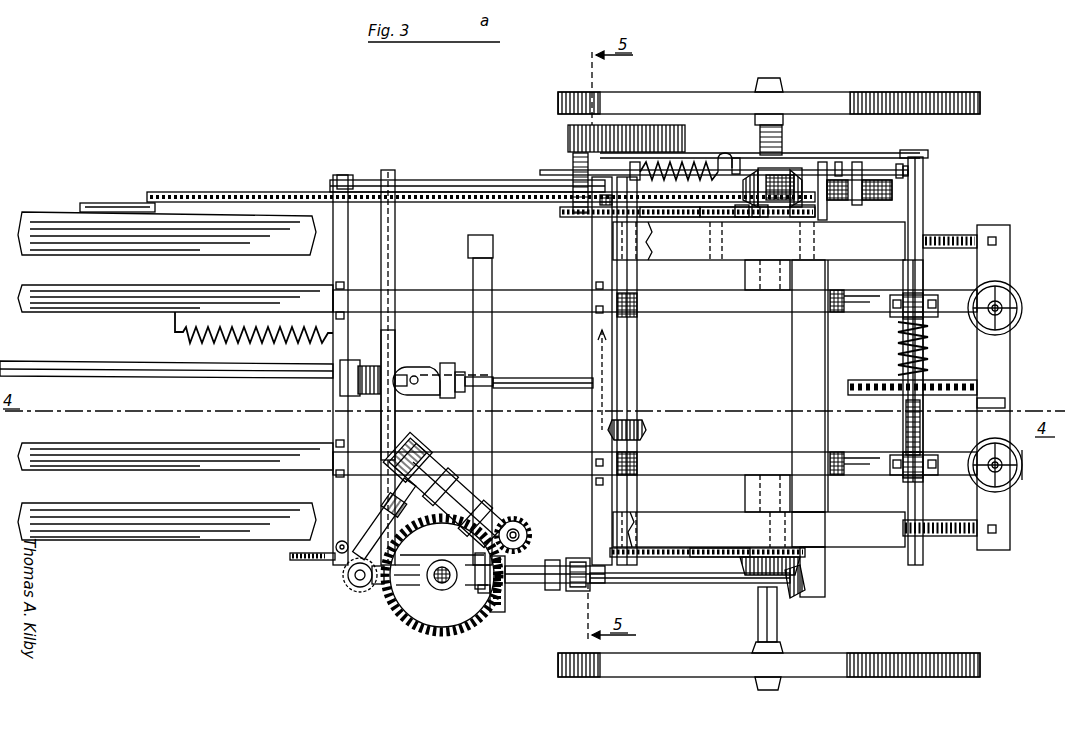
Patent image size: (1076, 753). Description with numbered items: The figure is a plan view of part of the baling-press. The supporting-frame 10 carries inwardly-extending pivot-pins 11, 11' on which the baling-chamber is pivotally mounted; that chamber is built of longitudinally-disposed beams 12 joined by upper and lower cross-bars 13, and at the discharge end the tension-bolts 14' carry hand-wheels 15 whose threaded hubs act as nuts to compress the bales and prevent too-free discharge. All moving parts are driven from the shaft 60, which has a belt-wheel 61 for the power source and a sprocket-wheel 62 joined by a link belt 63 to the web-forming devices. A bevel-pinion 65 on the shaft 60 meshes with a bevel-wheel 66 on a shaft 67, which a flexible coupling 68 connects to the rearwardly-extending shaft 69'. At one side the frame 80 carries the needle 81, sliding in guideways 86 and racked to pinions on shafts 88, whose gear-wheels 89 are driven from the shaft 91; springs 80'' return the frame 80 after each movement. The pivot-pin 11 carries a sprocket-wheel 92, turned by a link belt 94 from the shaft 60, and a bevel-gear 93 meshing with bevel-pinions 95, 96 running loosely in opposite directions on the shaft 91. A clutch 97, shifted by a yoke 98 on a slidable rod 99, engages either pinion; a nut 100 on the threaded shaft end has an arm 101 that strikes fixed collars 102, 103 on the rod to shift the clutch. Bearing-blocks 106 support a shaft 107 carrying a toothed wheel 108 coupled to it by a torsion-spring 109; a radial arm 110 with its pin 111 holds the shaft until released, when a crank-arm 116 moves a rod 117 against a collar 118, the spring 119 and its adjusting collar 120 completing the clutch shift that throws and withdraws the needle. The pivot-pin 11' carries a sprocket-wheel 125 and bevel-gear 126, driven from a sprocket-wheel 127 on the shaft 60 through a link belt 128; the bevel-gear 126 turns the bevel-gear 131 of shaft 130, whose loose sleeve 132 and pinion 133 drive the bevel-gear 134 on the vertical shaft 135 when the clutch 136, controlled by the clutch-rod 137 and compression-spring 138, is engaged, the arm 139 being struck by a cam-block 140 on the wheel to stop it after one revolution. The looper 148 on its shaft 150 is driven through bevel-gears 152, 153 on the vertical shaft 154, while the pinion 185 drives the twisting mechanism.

The supporting-frame 10 is at (92, 502).
The pivot-pin 11 is at (759, 367).
The pivot-pin 11' is at (766, 467).
The longitudinally-disposed beams 12 is at (55, 282).
The cross-bars 13 is at (980, 358).
The tension-bolts 14' is at (1037, 460).
The hand-wheels 15 is at (980, 290).
The shaft 60 is at (638, 362).
The belt-wheel 61 is at (568, 136).
The sprocket-wheel 62 is at (672, 212).
The link belt 63 is at (252, 188).
The bevel-pinion 65 is at (646, 432).
The bevel-wheel 66 is at (598, 357).
The shaft 67 is at (545, 388).
The flexible coupling 68 is at (418, 390).
The rearwardly-extending shaft 69' is at (166, 382).
The supporting-frame 80 is at (342, 370).
The springs 80'' is at (254, 338).
The needle 81 is at (393, 360).
The guideways 86 is at (395, 272).
The shafts 88 is at (458, 183).
The gear-wheels 89 is at (573, 152).
The shaft 91 is at (700, 207).
The sprocket-wheel 92 is at (803, 217).
The bevel-gear 93 is at (741, 217).
The link belt 94 is at (690, 217).
The bevel-pinion 95 is at (750, 170).
The bevel-pinion 96 is at (823, 162).
The clutch 97 is at (758, 217).
The yoke 98 is at (775, 165).
The slidable rod 99 is at (906, 164).
The nut 100 is at (868, 200).
The arm 101 is at (899, 164).
The collar 102 is at (925, 174).
The collar 103 is at (839, 162).
The bearing-blocks 106 is at (897, 297).
The shaft 107 is at (923, 207).
The toothed wheel 108 is at (856, 395).
The torsion-spring 109 is at (898, 354).
The radial arm 110 is at (923, 412).
The pin 111 is at (968, 410).
The crank-arm 116 is at (928, 153).
The rod 117 is at (858, 162).
The collar 118 is at (724, 153).
The spring 119 is at (688, 170).
The collar 120 is at (642, 176).
The sprocket-wheel 125 is at (796, 540).
The bevel-gear 126 is at (745, 572).
The sprocket-wheel 127 is at (652, 557).
The link belt 128 is at (700, 557).
The shaft 130 is at (672, 583).
The bevel-gear 131 is at (790, 585).
The loose sleeve 132 is at (550, 590).
The pinion 133 is at (500, 590).
The bevel-gear 134 is at (437, 627).
The vertically-disposed shaft 135 is at (432, 583).
The clutch 136 is at (578, 591).
The clutch-rod 137 is at (555, 566).
The compression-spring 138 is at (310, 562).
The arm 139 is at (477, 578).
The cam-block 140 is at (482, 594).
The looper 148 is at (398, 470).
The looper shafts 150 is at (375, 512).
The bevel-gears 152 is at (352, 583).
The bevel-gears 153 is at (378, 585).
The vertical shaft 154 is at (364, 592).
The pinion 185 is at (520, 520).